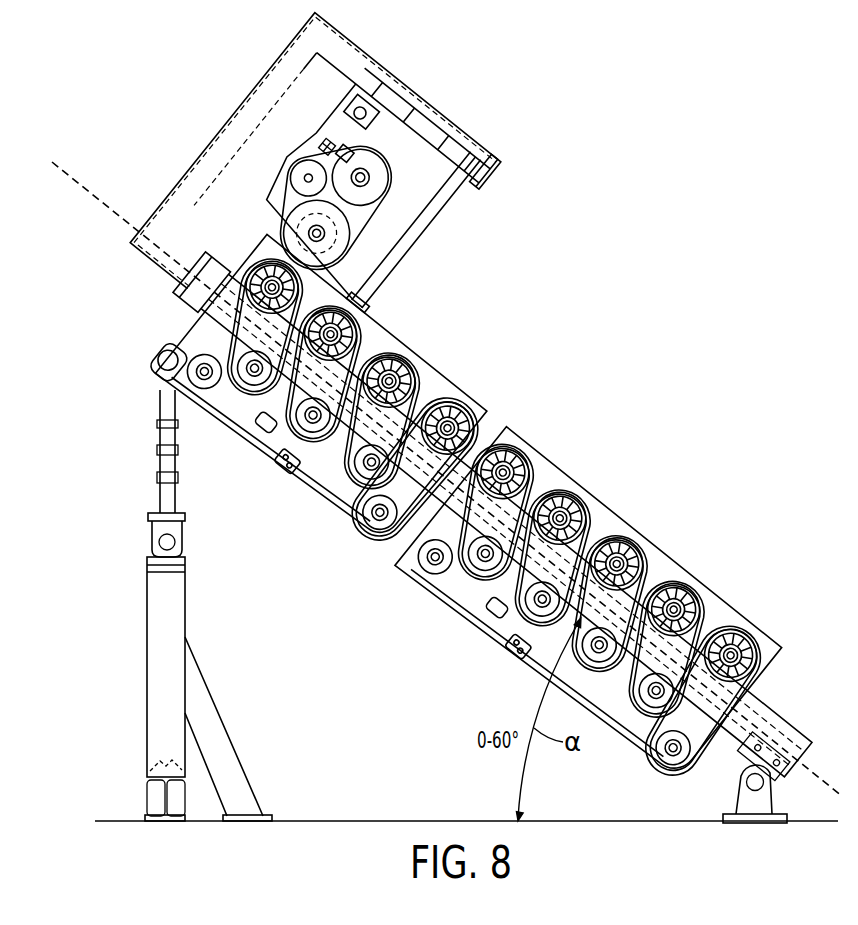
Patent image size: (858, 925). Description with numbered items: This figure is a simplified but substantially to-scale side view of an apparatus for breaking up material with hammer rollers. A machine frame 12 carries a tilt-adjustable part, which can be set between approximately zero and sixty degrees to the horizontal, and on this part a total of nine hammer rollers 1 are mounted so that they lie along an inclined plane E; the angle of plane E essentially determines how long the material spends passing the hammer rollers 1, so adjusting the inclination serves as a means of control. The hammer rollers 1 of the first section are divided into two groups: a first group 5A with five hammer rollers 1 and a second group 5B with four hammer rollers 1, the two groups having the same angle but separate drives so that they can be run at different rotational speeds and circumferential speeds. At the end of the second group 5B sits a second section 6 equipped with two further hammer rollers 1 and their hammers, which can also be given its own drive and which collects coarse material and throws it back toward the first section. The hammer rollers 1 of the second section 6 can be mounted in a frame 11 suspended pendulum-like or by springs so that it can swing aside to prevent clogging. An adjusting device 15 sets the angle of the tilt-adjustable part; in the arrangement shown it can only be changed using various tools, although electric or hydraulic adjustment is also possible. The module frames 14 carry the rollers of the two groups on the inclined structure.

The hammer roller 1 is at (467, 508).
The first group 5A is at (692, 590).
The second group 5B is at (413, 367).
The second section 6 is at (372, 192).
The frame 11 is at (333, 128).
The machine frame 12 is at (782, 730).
The module frame 14 is at (467, 508).
The adjusting device 15 is at (172, 493).
The plane E is at (98, 200).